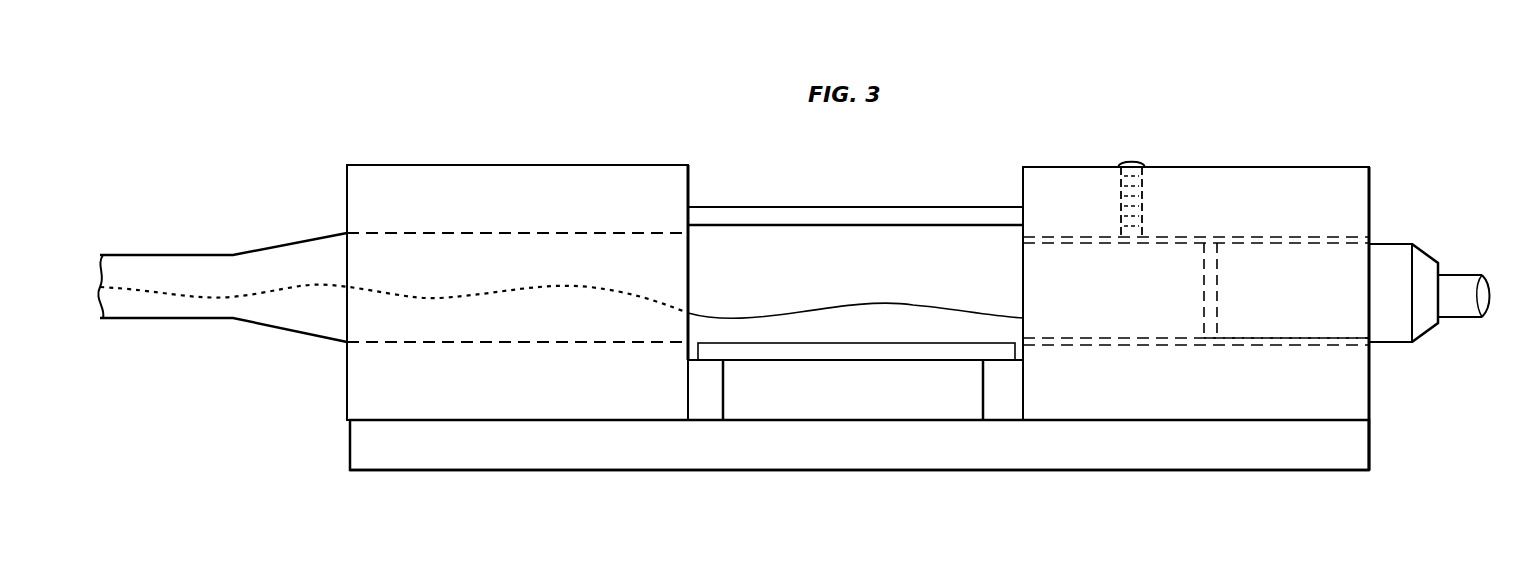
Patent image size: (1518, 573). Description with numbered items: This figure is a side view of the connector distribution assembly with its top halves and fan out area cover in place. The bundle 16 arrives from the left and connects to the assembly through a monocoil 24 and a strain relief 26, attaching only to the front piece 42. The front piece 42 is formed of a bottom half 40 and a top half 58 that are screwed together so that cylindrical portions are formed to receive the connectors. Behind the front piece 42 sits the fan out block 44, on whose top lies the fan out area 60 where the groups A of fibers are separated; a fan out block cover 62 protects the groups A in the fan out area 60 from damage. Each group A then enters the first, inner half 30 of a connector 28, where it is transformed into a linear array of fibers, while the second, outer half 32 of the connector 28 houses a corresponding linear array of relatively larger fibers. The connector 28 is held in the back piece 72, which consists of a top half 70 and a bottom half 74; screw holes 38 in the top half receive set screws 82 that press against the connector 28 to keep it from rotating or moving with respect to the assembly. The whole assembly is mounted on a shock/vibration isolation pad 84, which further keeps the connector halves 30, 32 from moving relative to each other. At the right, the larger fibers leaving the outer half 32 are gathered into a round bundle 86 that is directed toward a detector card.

The bundle 16 is at (227, 302).
The monocoil 24 is at (158, 320).
The strain relief 26 is at (313, 260).
The connector 28 is at (1245, 263).
The first inner half of connector 30 is at (1125, 328).
The second outer half of connector 32 is at (1305, 328).
The screw holes 38 is at (1150, 185).
The bottom half of front piece 40 is at (358, 367).
The front piece 42 is at (300, 418).
The fan out block 44 is at (855, 410).
The top half of front piece 58 is at (672, 188).
The fan out area 60 is at (838, 350).
The fan out block cover 62 is at (820, 215).
The top half of back piece 70 is at (1345, 218).
The back piece 72 is at (1382, 400).
The bottom half of back piece 74 is at (1343, 387).
The set screws 82 is at (1123, 162).
The shock/vibration isolation pad 84 is at (1137, 448).
The round bundle 86 is at (1455, 282).
The group of fibers A is at (833, 310).